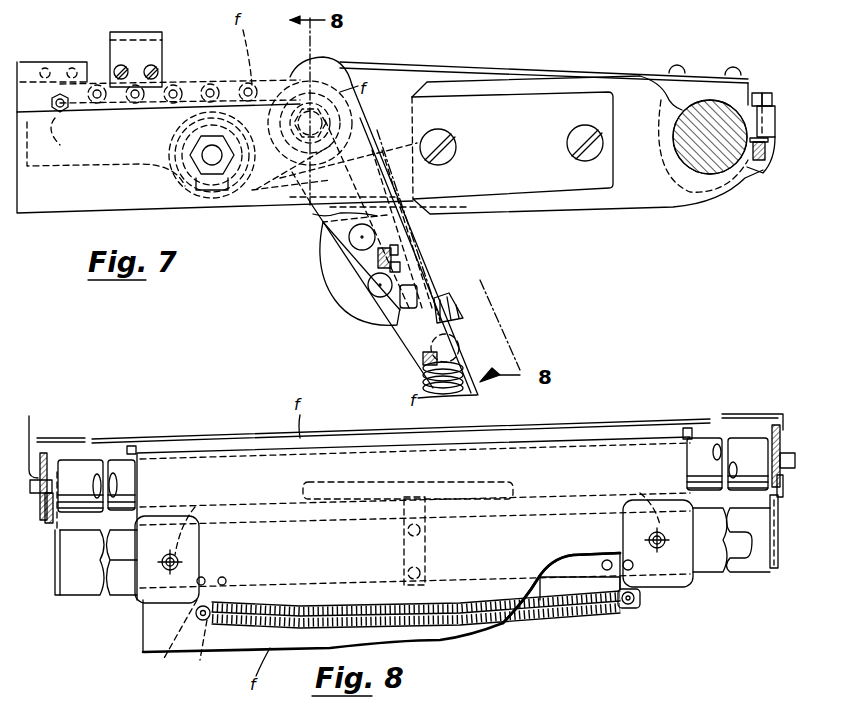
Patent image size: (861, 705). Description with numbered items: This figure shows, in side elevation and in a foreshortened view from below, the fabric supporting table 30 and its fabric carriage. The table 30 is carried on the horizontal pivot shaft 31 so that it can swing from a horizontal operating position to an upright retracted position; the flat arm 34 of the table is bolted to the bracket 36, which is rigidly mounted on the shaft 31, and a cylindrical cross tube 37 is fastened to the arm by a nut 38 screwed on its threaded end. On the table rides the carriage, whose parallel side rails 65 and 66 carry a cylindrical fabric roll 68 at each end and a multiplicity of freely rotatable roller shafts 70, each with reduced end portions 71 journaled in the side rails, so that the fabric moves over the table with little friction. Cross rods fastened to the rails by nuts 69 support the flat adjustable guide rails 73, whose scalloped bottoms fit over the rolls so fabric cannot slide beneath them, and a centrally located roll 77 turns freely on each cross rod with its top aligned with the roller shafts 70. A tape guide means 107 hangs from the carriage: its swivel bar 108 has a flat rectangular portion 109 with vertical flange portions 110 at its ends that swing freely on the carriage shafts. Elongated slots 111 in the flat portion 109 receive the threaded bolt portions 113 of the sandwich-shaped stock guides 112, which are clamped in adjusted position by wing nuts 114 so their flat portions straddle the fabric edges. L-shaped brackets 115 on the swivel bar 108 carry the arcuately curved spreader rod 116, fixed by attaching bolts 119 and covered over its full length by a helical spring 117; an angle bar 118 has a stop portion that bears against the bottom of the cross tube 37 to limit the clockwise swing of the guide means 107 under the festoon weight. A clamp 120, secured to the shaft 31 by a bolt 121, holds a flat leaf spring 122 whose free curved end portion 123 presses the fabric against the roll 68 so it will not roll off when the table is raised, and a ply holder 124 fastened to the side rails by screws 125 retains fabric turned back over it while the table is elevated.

In FIG. 7, the fabric supporting table 30 is at (200, 232).
In FIG. 8, the fabric supporting table 30 is at (715, 392).
In FIG. 7, the horizontal pivot shaft 31 is at (702, 100).
In FIG. 7, the flat bar or arm 34 is at (47, 205).
In FIG. 7, the bracket 36 is at (636, 207).
In FIG. 8, the cylindrical cross tube 37 is at (520, 476).
In FIG. 7, the nut 38 is at (188, 174).
In FIG. 8, the side rail 65 is at (785, 495).
In FIG. 7, the side rail 66 is at (48, 62).
In FIG. 8, the side rail 66 is at (30, 433).
In FIG. 8, the cylindrical fabric roll 68 is at (118, 460).
In FIG. 7, the nut 69 is at (72, 110).
In FIG. 7, the cylindrical roller shaft 70 is at (213, 64).
In FIG. 7, the reduced end portion 71 is at (87, 70).
In FIG. 8, the adjustable guide rail 73 is at (136, 448).
In FIG. 7, the cylindrical roll 77 is at (60, 115).
In FIG. 7, the tape guide means 107 is at (483, 300).
In FIG. 8, the swivel bar 108 is at (560, 565).
In FIG. 7, the flat rectangular portion 109 is at (349, 238).
In FIG. 8, the flat rectangular portion 109 is at (98, 605).
In FIG. 7, the vertical flange portion 110 is at (312, 208).
In FIG. 8, the vertical flange portion 110 is at (55, 595).
In FIG. 7, the elongated slot 111 is at (405, 240).
In FIG. 8, the elongated slot 111 is at (95, 595).
In FIG. 7, the sandwich-shaped stock guide 112 is at (447, 298).
In FIG. 8, the sandwich-shaped stock guide 112 is at (210, 550).
In FIG. 7, the threaded bolt portion 113 is at (376, 258).
In FIG. 7, the wing nut 114 is at (368, 300).
In FIG. 8, the wing nut 114 is at (190, 505).
In FIG. 8, the L-shaped bracket 115 is at (180, 620).
In FIG. 8, the arcuately curved spreader rod 116 is at (580, 622).
In FIG. 7, the helical spring 117 is at (423, 384).
In FIG. 8, the helical spring 117 is at (530, 625).
In FIG. 7, the angle bar 118 is at (258, 220).
In FIG. 8, the angle bar 118 is at (403, 545).
In FIG. 7, the attaching bolt 119 is at (422, 358).
In FIG. 8, the attaching bolt 119 is at (210, 625).
In FIG. 7, the clamp 120 is at (740, 190).
In FIG. 7, the bolt 121 is at (758, 92).
In FIG. 7, the flat leaf spring 122 is at (545, 68).
In FIG. 7, the free curved end portion 123 is at (350, 62).
In FIG. 7, the ply holder or bar 124 is at (108, 30).
In FIG. 8, the ply holder or bar 124 is at (260, 436).
In FIG. 7, the screw 125 is at (150, 65).
In FIG. 8, the screw 125 is at (40, 453).